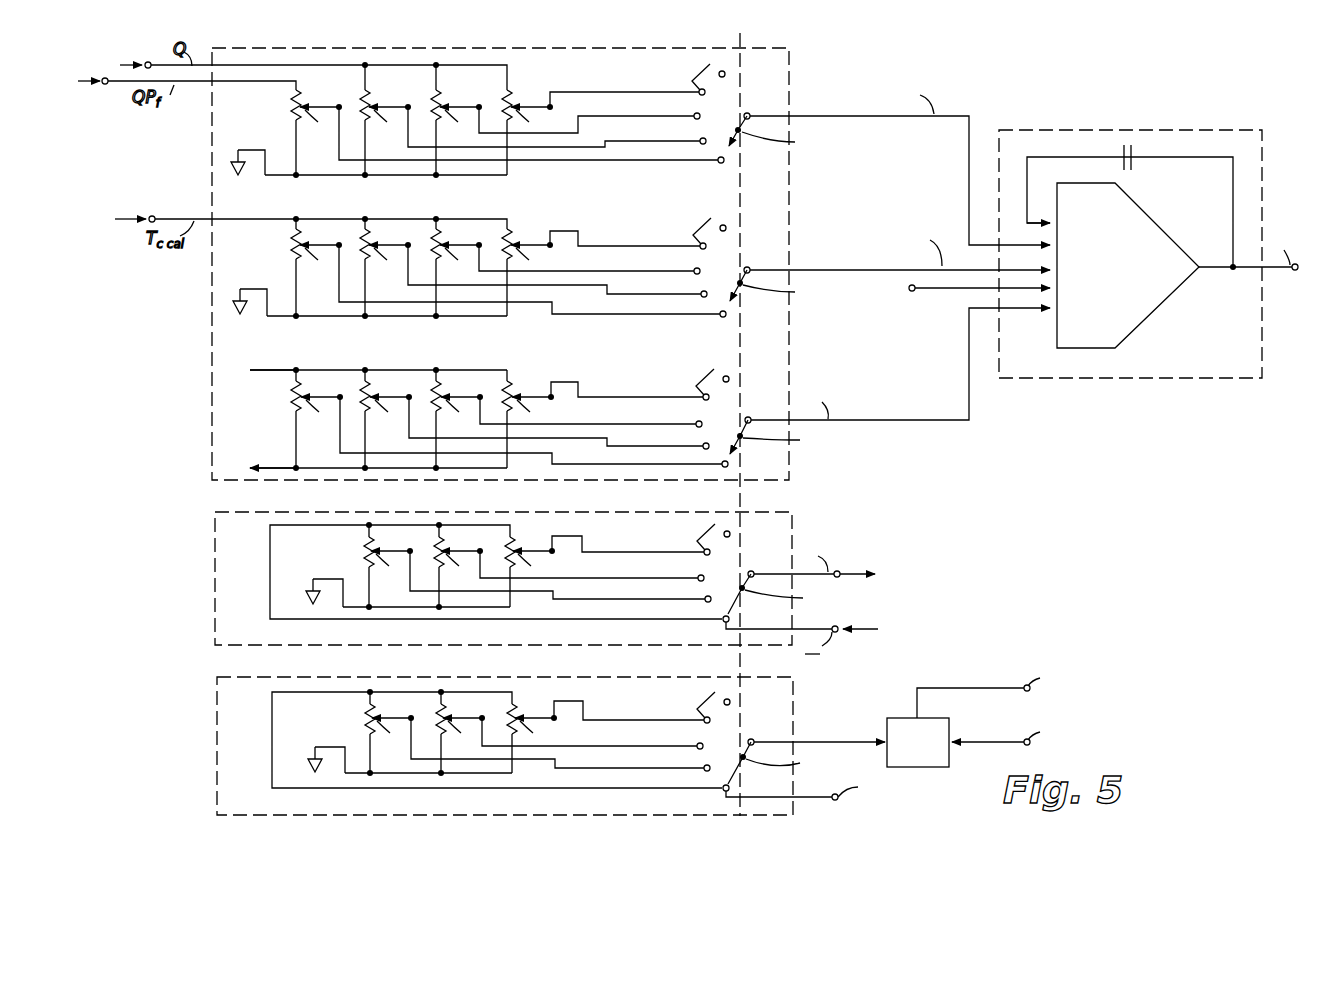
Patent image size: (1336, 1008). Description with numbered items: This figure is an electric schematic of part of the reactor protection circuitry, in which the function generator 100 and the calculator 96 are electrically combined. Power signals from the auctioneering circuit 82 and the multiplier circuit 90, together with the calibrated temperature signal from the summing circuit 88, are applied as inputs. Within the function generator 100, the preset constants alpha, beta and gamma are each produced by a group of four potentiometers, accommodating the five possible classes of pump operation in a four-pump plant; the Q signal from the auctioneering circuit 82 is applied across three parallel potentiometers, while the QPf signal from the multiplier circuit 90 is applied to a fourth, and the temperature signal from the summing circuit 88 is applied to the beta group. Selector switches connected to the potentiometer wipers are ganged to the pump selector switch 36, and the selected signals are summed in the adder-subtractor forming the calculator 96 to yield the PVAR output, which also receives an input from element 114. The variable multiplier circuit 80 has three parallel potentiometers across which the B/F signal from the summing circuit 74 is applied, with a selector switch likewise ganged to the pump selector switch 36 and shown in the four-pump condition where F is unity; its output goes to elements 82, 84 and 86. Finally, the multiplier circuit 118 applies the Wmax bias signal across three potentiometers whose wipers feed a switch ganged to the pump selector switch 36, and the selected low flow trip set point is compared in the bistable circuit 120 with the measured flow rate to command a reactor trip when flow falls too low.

The pump selector switch 36 is at (762, 31).
The summing circuit 74 is at (856, 630).
The variable multiplier circuit 80 is at (206, 560).
The auctioneering circuit 82 is at (156, 63).
The signal destination 84 is at (895, 561).
The signal destination 86 is at (862, 568).
The summing circuit 88 is at (154, 219).
The multiplier circuit 90 is at (120, 84).
The calculator 96 is at (1112, 127).
The function generator 100 is at (172, 312).
The input signal source 114 is at (962, 290).
The multiplier circuit 118 is at (208, 748).
The bistable circuit 120 is at (904, 717).